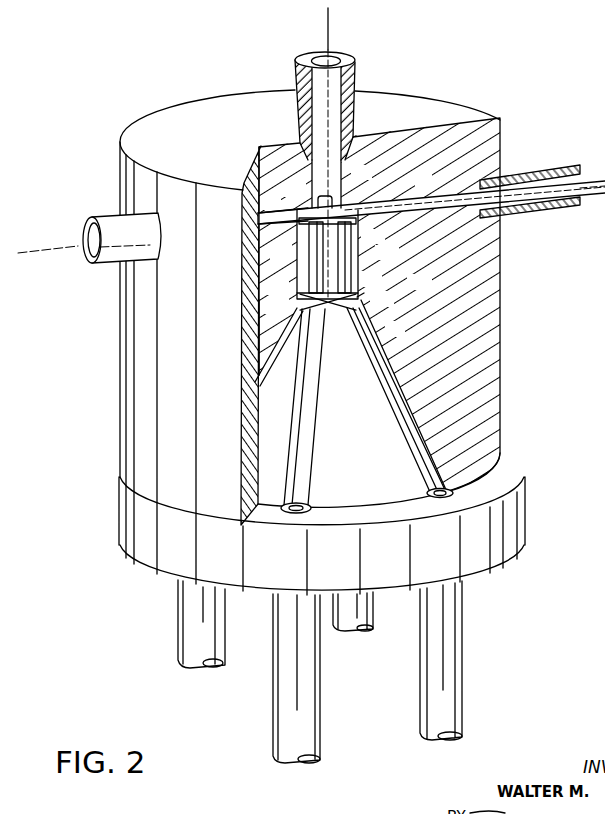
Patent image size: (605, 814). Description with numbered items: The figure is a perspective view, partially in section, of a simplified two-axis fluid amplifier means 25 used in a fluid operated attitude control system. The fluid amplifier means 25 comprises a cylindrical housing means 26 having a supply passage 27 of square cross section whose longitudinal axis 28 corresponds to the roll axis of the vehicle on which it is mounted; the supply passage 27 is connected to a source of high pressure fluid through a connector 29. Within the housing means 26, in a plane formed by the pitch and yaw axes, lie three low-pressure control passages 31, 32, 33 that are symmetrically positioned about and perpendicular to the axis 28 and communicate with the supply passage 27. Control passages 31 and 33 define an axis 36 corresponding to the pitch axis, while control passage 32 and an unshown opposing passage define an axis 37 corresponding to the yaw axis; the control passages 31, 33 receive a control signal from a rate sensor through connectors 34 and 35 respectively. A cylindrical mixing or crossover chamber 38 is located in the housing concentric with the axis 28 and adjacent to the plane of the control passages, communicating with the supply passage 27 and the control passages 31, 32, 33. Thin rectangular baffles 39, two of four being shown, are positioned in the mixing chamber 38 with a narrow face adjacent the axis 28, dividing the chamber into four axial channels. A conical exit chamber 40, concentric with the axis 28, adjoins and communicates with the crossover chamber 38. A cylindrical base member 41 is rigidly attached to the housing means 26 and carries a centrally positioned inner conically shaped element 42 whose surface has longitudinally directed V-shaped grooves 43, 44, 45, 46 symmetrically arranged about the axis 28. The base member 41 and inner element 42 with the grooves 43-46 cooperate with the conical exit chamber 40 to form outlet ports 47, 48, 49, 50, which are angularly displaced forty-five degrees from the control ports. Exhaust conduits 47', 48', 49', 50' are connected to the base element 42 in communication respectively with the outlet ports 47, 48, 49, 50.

The fluid amplifier means 25 is at (144, 89).
The cylindrical housing means 26 is at (214, 93).
The supply passage 27 is at (344, 187).
The axis 28 is at (331, 39).
The connector 29 is at (358, 70).
The control passage 31 is at (412, 198).
The control passage 32 is at (316, 198).
The control passage 33 is at (289, 211).
The connector 34 is at (525, 163).
The connector 35 is at (100, 266).
The axis 36 is at (585, 184).
The axis 37 is at (427, 317).
The mixing chamber 38 is at (356, 232).
The baffles 39 is at (311, 259).
The conical exit chamber 40 is at (279, 334).
The cylindrical base member 41 is at (525, 512).
The inner conically shaped element 42 is at (361, 413).
The V shaped groove 43 is at (288, 473).
The V shaped groove 44 is at (418, 468).
The V shaped groove 45 is at (360, 298).
The V shaped groove 46 is at (299, 300).
The outlet port 47 is at (295, 407).
The outlet port 48 is at (396, 400).
The outlet port 49 is at (367, 283).
The outlet port 50 is at (279, 331).
The exhaust conduit 47' is at (311, 678).
The exhaust conduit 48' is at (457, 660).
The exhaust conduit 49' is at (368, 618).
The exhaust conduit 50' is at (179, 624).